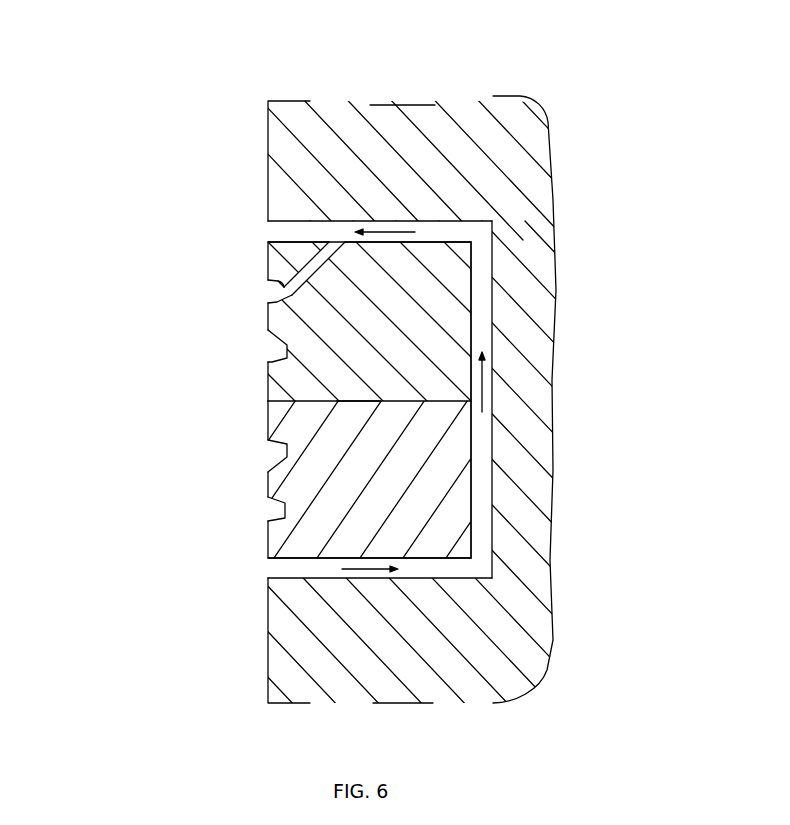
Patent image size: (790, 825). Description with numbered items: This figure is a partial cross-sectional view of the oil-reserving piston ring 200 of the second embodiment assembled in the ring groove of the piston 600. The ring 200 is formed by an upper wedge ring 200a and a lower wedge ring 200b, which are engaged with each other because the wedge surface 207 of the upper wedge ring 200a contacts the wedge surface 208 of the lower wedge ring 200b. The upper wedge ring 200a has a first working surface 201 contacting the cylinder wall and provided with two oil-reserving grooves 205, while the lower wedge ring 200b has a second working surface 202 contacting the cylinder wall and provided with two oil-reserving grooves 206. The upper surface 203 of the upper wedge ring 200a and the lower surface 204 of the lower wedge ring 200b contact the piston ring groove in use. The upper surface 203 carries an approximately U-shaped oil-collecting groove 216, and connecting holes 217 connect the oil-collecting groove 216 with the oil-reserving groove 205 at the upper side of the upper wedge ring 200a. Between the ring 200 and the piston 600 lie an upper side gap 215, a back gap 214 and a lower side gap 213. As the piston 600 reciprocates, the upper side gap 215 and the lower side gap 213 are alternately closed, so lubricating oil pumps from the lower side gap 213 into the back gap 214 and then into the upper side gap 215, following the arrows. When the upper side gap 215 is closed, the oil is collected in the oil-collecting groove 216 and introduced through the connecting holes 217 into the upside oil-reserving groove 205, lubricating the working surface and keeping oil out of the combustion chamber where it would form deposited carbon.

The oil-reserving piston ring 200 is at (362, 347).
The upper wedge ring 200a is at (457, 277).
The lower wedge ring 200b is at (455, 483).
The first working surface 201 is at (268, 330).
The second working surface 202 is at (268, 503).
The upper surface 203 is at (315, 252).
The lower surface 204 is at (300, 560).
The oil-reserving grooves 205 is at (273, 293).
The oil-reserving grooves 206 is at (268, 463).
The wedge surface 207 is at (337, 401).
The wedge surface 208 is at (337, 401).
The lower side gap 213 is at (442, 575).
The back gap 214 is at (480, 342).
The upper side gap 215 is at (440, 230).
The oil-collecting groove 216 is at (345, 244).
The connecting holes 217 is at (286, 283).
The piston 600 is at (490, 657).